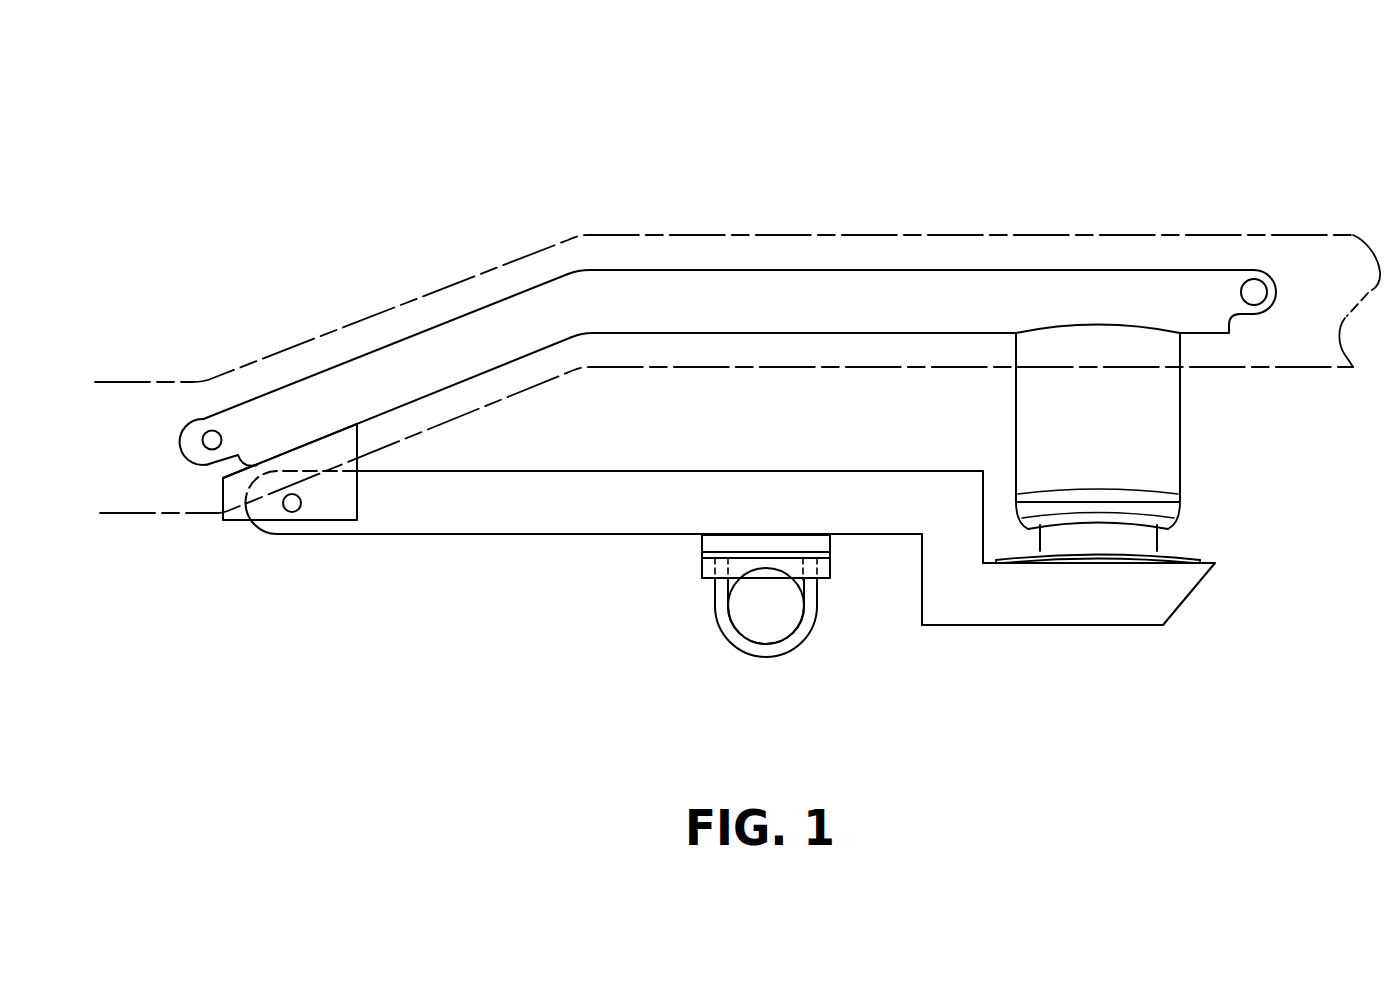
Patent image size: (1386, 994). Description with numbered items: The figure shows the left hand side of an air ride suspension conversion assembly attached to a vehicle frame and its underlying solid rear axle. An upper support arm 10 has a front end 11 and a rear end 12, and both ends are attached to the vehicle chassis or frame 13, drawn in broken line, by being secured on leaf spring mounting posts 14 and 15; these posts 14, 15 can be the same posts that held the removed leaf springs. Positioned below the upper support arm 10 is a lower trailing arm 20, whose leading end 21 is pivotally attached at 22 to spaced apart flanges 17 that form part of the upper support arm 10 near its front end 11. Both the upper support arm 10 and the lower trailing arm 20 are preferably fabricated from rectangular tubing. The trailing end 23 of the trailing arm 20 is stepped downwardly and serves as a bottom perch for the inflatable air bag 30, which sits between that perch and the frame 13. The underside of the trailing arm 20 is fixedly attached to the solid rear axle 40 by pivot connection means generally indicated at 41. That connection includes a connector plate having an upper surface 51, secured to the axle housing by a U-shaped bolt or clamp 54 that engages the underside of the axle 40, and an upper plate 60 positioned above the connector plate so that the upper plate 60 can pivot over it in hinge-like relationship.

The upper support arm 10 is at (788, 302).
The front end 11 is at (377, 377).
The rear end 12 is at (1175, 297).
The chassis or frame 13 is at (587, 235).
The leaf spring mounting post 14 is at (213, 440).
The leaf spring mounting post 15 is at (1254, 292).
The spaced apart flanges 17 is at (237, 495).
The lower trailing arm 20 is at (578, 513).
The leading end 21 is at (435, 513).
The pivotal attachment 22 is at (292, 505).
The trailing end 23 is at (1037, 603).
The inflatable air bag 30 is at (1119, 427).
The solid rear axle 40 is at (773, 617).
The pivot connection means 41 is at (836, 557).
The upper surface 51 is at (710, 570).
The U-shaped bolt 54 is at (722, 628).
The upper plate 60 is at (700, 538).